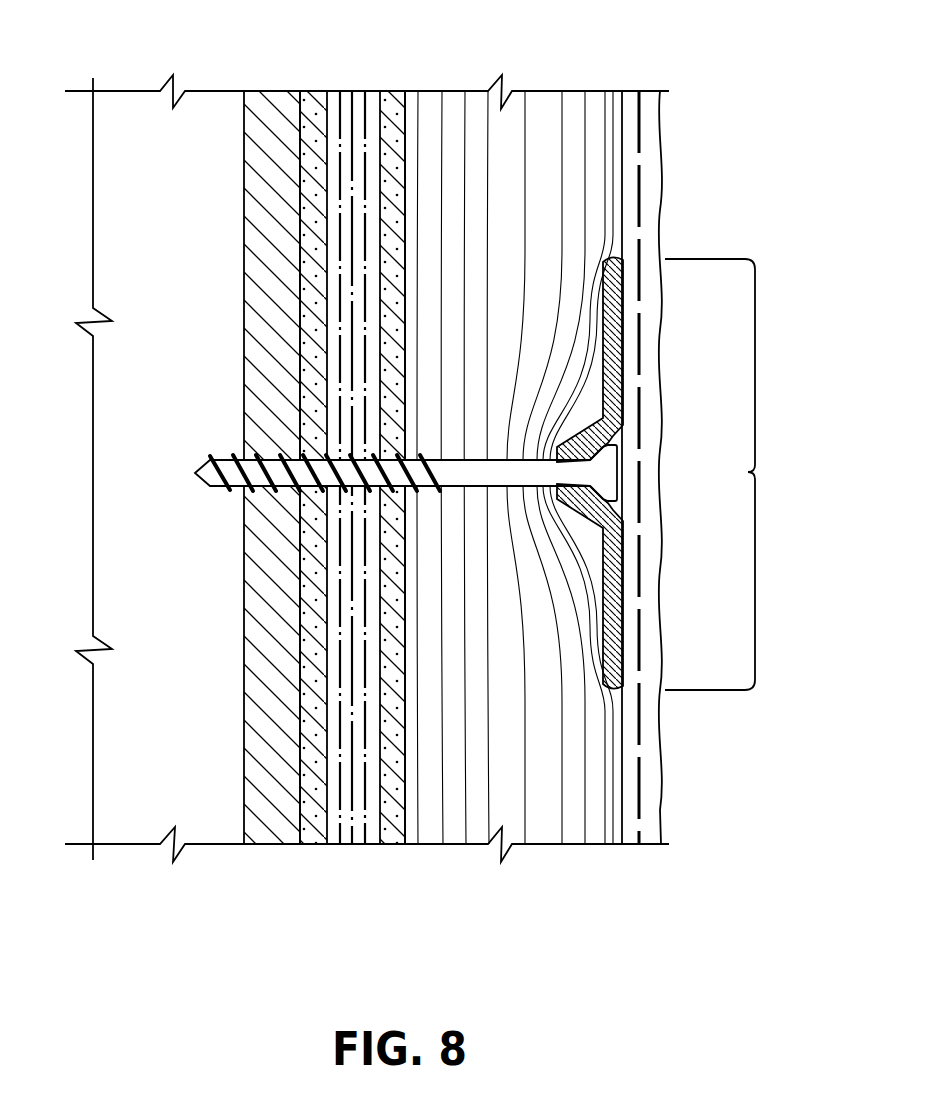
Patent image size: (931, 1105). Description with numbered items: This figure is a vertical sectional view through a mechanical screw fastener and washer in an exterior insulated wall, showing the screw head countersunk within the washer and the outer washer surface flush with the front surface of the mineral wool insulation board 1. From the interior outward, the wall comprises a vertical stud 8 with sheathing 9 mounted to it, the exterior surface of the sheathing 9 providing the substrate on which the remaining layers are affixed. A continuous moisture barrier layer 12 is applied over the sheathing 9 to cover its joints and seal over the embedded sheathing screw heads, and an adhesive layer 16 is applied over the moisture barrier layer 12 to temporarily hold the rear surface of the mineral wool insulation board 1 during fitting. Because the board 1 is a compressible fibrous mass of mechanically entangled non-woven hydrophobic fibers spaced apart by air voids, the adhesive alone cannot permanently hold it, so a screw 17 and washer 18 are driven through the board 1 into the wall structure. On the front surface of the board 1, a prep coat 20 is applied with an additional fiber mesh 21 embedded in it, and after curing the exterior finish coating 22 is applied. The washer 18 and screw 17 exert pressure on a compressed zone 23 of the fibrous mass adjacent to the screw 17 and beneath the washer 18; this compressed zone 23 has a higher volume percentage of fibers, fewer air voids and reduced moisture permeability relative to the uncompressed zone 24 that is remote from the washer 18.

The mineral wool insulation board 1 is at (542, 100).
The vertical stud 8 is at (270, 100).
The sheathing 9 is at (352, 62).
The moisture barrier layer 12 is at (361, 438).
The adhesive layer 16 is at (352, 62).
The screw 17 is at (598, 474).
The washer 18 is at (617, 562).
The prep coat 20 is at (614, 436).
The additional fiber mesh 21 is at (648, 100).
The exterior finish coating 22 is at (688, 436).
The compressed zone 23 is at (733, 474).
The uncompressed zone 24 is at (580, 200).